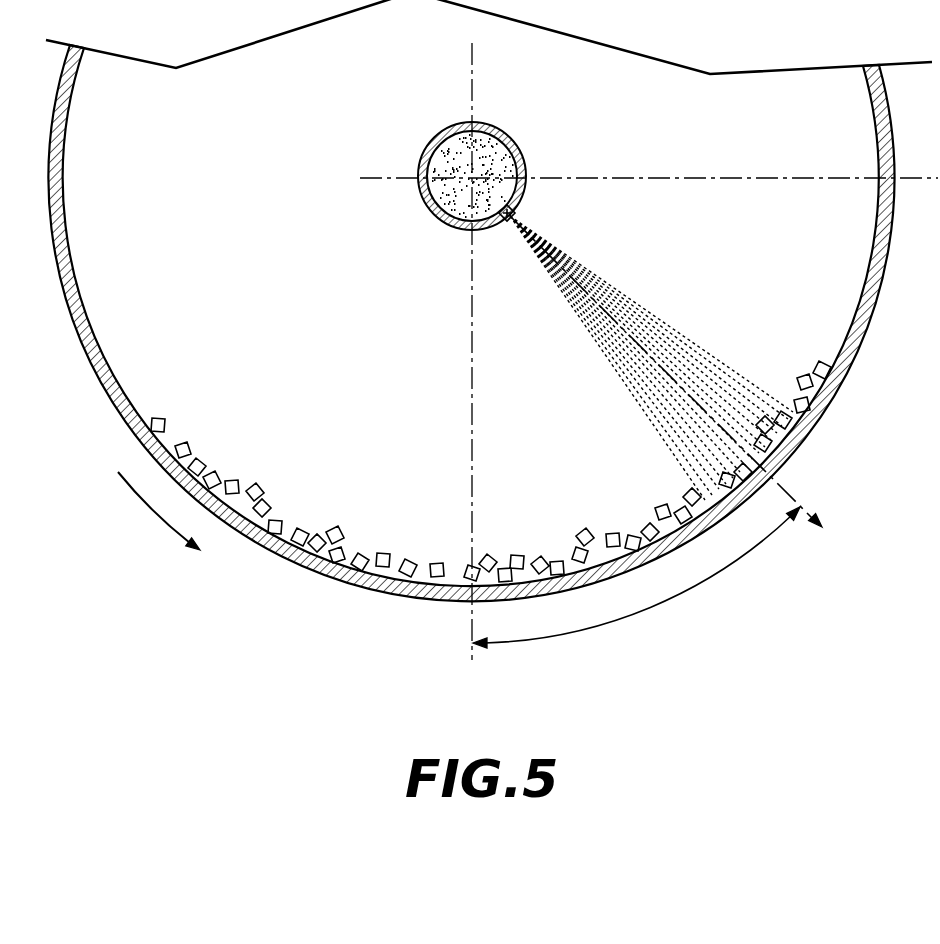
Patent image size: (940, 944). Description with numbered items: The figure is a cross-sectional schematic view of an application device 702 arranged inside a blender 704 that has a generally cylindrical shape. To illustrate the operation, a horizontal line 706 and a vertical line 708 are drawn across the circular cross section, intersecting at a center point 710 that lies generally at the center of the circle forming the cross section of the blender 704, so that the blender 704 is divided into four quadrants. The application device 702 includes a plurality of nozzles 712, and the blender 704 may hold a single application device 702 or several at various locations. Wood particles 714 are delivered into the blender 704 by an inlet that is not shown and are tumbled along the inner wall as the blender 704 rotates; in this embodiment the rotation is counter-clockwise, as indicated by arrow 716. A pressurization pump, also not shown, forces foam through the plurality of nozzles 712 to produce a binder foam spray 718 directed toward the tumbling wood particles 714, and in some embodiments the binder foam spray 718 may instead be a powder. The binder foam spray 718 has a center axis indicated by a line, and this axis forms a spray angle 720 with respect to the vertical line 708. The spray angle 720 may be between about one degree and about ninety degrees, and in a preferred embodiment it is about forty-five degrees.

The application device 702 is at (470, 155).
The blender 704 is at (310, 568).
The horizontal line 706 is at (665, 178).
The vertical line 708 is at (471, 614).
The center point 710 is at (502, 162).
The nozzles 712 is at (523, 213).
The wood particles 714 is at (586, 537).
The arrow 716 is at (150, 505).
The binder foam spray 718 is at (715, 362).
The spray angle 720 is at (652, 605).